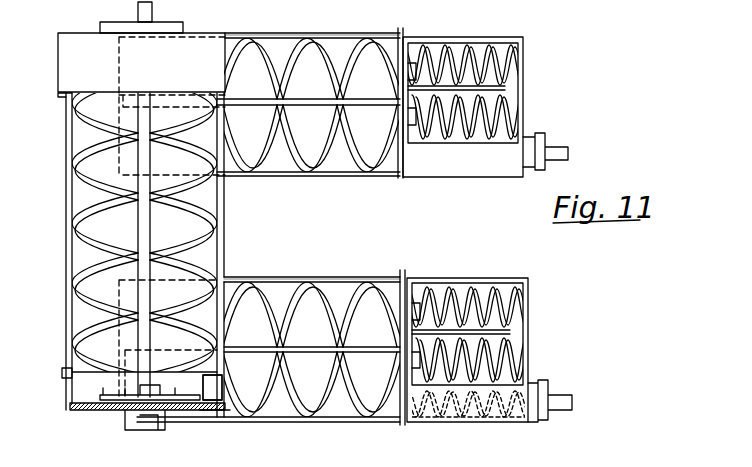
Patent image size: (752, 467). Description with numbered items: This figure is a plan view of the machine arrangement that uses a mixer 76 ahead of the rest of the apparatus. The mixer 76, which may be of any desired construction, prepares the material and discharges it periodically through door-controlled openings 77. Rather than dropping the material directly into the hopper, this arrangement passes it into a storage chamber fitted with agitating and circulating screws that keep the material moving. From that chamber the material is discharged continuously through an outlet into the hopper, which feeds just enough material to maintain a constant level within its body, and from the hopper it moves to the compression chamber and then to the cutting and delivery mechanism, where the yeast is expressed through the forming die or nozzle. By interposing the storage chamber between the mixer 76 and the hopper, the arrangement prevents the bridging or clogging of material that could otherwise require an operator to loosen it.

The mixer 76 is at (70, 207).
The door-controlled openings 77 is at (222, 410).